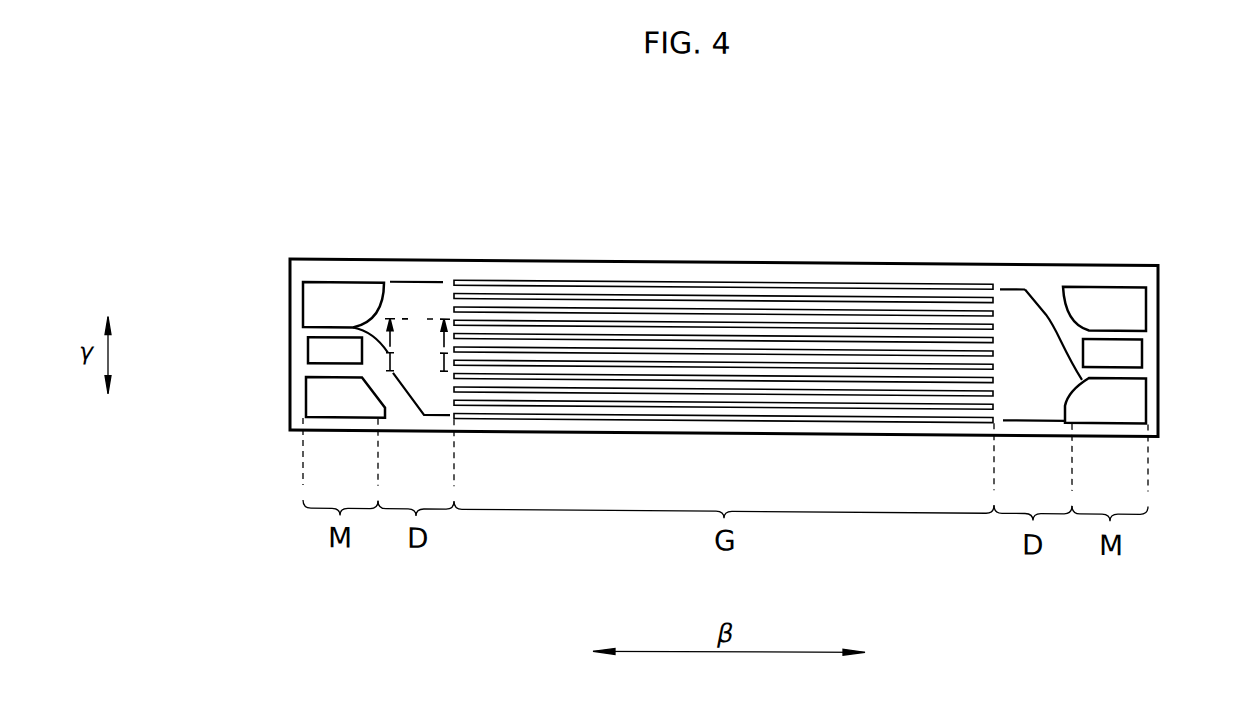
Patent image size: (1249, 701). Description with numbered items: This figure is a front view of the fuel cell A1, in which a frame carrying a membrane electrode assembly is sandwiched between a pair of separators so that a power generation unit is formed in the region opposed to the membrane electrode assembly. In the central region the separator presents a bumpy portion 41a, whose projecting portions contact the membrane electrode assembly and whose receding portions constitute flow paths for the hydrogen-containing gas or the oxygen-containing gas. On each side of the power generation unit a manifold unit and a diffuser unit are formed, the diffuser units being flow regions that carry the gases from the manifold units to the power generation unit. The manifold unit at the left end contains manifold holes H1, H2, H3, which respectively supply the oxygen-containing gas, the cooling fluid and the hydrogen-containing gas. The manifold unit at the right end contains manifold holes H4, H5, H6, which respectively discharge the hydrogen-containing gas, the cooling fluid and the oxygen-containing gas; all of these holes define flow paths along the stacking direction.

The fuel cell A1 is at (882, 258).
The bumpy portion of separator 41a is at (703, 314).
The manifold hole H1 is at (316, 298).
The manifold hole H2 is at (320, 355).
The manifold hole H3 is at (320, 407).
The manifold hole H4 is at (1138, 296).
The manifold hole H5 is at (1133, 342).
The manifold hole H6 is at (1128, 397).